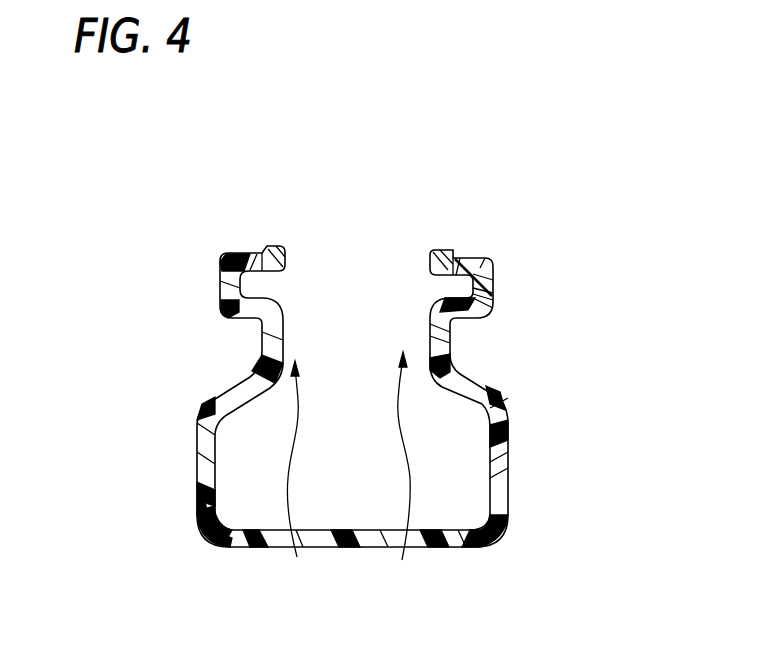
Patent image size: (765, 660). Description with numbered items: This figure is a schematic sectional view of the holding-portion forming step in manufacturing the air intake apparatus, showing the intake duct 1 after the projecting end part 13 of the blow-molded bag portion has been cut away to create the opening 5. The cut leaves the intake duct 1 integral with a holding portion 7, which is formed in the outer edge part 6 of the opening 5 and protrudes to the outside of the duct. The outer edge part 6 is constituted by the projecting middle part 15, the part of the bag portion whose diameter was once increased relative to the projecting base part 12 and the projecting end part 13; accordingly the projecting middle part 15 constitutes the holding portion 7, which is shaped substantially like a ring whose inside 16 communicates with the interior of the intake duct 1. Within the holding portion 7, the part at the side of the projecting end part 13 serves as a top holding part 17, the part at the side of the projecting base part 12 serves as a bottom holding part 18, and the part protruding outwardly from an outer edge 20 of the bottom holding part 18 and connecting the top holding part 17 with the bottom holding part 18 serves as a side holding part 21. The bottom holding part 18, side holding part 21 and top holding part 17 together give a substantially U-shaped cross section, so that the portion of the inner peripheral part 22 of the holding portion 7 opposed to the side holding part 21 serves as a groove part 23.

The intake duct 1 is at (508, 423).
The opening 5 is at (358, 258).
The outer edge part 6 is at (244, 247).
The holding portion 7 is at (493, 261).
The projecting middle part 15 is at (483, 303).
The projecting base part 12 is at (257, 345).
The projecting end part 13 is at (415, 228).
The inside of the ring 16 is at (317, 252).
The top holding part 17 is at (240, 253).
The bottom holding part 18 is at (262, 323).
The outer edge 20 is at (218, 297).
The side holding part 21 is at (232, 281).
The inner peripheral part 22 is at (348, 473).
The groove part 23 is at (269, 245).